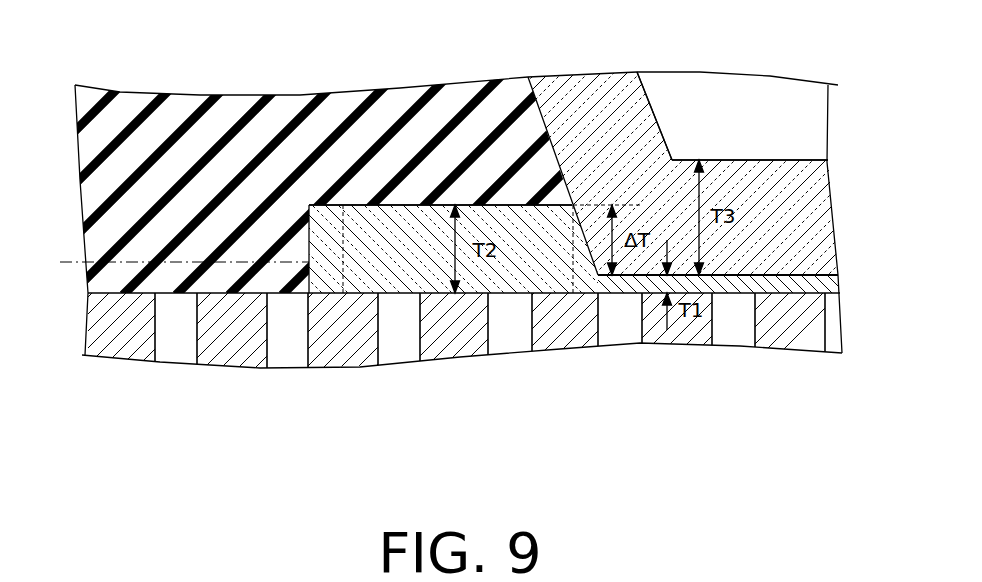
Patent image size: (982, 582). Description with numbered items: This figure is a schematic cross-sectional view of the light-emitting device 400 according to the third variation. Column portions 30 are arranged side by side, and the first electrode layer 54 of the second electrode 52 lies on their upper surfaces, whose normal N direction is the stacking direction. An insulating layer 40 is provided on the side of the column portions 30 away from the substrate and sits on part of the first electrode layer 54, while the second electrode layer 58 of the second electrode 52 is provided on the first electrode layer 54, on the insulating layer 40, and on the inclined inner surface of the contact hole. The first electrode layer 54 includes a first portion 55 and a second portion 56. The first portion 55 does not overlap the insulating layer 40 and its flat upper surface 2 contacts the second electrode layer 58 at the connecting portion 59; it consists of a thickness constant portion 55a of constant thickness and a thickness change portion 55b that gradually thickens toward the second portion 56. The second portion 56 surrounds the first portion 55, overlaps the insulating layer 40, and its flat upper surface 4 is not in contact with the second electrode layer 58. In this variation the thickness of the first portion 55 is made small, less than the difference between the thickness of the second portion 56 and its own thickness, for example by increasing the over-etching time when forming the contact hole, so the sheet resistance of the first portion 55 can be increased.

The upper surface 2 is at (783, 275).
The upper surface 4 is at (353, 205).
The column portion 30 is at (343, 327).
The insulating layer 40 is at (405, 148).
The second electrode 52 is at (838, 153).
The first electrode layer 54 is at (619, 445).
The first portion 55 is at (547, 411).
The thickness constant portion 55a is at (628, 293).
The thickness change portion 55b is at (583, 293).
The second portion 56 is at (498, 293).
The second electrode layer 58 is at (797, 188).
The connecting portion 59 is at (738, 148).
The light-emitting device 400 is at (806, 56).
The normal N is at (176, 265).